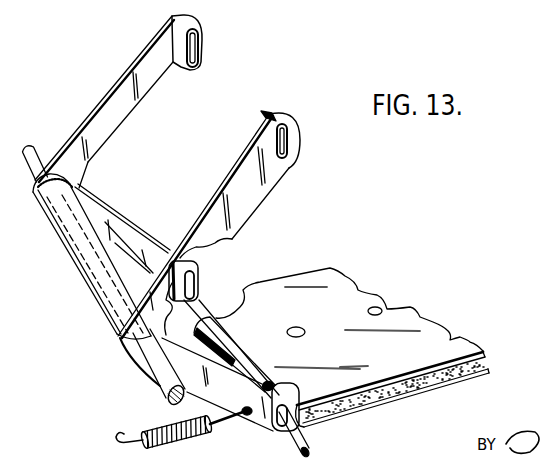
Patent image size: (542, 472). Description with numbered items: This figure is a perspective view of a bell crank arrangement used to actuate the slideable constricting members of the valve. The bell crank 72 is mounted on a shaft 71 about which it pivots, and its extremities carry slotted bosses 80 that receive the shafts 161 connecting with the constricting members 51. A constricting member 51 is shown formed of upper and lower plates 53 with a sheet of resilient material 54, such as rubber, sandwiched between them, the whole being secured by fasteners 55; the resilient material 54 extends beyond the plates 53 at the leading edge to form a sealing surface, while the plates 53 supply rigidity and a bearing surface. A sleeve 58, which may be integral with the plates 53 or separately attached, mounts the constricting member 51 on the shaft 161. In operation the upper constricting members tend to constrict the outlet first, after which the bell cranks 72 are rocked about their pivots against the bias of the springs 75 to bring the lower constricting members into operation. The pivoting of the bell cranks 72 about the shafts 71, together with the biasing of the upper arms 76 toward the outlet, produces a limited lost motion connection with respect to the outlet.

The constricting member 51 is at (427, 312).
The plates 53 is at (448, 338).
The sheet of resilient material 54 is at (486, 359).
The fasteners 55 is at (303, 328).
The sleeve 58 is at (228, 337).
The shaft 71 is at (158, 384).
The bell crank 72 is at (89, 97).
The spring 75 is at (190, 443).
The upper arm 76 is at (131, 57).
The slotted boss 80 is at (193, 22).
The shaft 161 is at (298, 440).